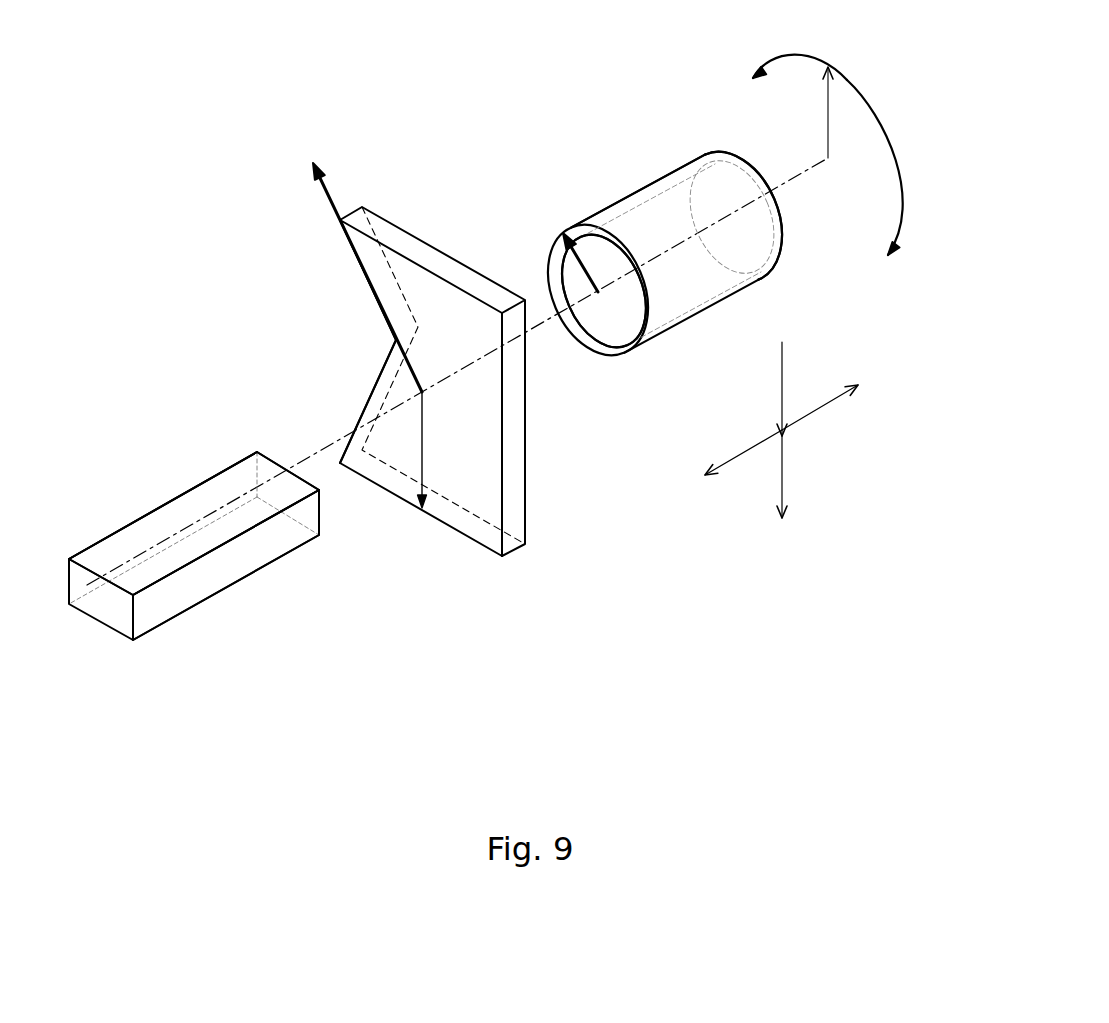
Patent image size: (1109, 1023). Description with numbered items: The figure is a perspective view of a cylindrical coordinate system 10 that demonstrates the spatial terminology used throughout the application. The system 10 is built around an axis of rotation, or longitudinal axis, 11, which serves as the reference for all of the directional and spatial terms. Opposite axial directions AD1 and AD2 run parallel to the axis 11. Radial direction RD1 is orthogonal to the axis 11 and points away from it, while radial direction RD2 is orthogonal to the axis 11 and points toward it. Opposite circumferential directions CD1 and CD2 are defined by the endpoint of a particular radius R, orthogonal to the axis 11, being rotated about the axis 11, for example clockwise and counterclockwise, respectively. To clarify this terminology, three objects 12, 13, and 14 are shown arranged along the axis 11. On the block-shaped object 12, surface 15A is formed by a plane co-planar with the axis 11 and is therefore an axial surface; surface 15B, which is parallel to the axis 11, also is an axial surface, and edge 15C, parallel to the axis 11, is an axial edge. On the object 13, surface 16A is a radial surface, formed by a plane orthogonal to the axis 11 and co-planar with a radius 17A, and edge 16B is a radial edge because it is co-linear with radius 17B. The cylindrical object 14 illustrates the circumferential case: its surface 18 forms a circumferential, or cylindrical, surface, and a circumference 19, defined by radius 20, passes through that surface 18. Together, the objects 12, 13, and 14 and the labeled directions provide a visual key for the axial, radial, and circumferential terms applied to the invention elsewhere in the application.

The cylindrical coordinate system 10 is at (284, 293).
The axis of rotation 11 is at (762, 193).
The object 12 is at (167, 640).
The object 13 is at (545, 553).
The object 14 is at (697, 329).
The axial surface 15A is at (158, 527).
The axial surface 15B is at (210, 581).
The axial edge 15C is at (185, 490).
The radial surface 16A is at (428, 293).
The radial edge 16B is at (370, 283).
The radius 17A is at (422, 443).
The radius 17B is at (327, 197).
The circumferential surface 18 is at (634, 193).
The circumference 19 is at (556, 248).
The radius 20 is at (553, 278).
The radius R is at (827, 108).
The circumferential direction CD1 is at (910, 212).
The circumferential direction CD2 is at (787, 50).
The radial direction RD1 is at (785, 485).
The radial direction RD2 is at (785, 360).
The axial direction AD1 is at (813, 410).
The axial direction AD2 is at (743, 452).